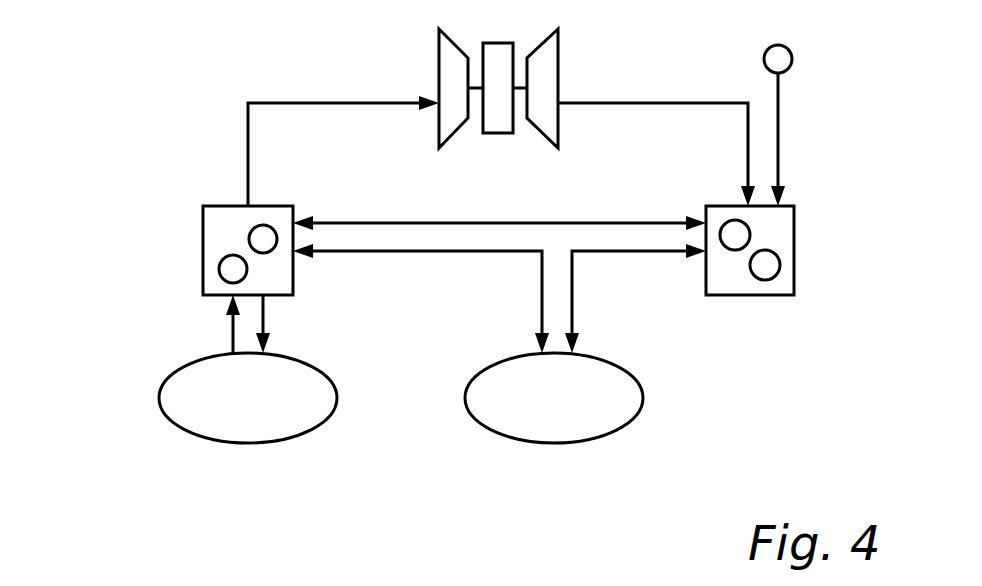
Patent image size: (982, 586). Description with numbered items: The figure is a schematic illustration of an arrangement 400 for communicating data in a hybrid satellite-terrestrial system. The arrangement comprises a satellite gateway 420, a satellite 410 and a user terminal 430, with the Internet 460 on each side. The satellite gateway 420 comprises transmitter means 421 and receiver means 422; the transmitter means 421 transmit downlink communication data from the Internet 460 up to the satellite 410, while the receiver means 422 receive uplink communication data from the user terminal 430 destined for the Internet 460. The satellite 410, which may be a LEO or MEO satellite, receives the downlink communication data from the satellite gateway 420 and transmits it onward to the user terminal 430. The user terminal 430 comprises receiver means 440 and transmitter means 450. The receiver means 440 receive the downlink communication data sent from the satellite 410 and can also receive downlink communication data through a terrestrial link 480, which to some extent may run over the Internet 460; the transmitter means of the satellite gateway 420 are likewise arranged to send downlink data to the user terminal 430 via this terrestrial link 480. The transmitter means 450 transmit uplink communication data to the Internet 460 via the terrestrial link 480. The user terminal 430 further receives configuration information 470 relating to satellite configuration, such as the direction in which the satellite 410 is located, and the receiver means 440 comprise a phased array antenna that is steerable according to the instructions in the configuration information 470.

The arrangement 400 is at (106, 480).
The satellite 410 is at (439, 58).
The satellite gateway 420 is at (203, 233).
The transmitter means 421 is at (250, 243).
The receiver means 422 is at (223, 279).
The user terminal 430 is at (794, 232).
The receiver means 440 is at (737, 250).
The transmitter means 450 is at (765, 280).
The Internet 460 is at (328, 415).
The configuration information 470 is at (792, 60).
The terrestrial link 480 is at (587, 222).